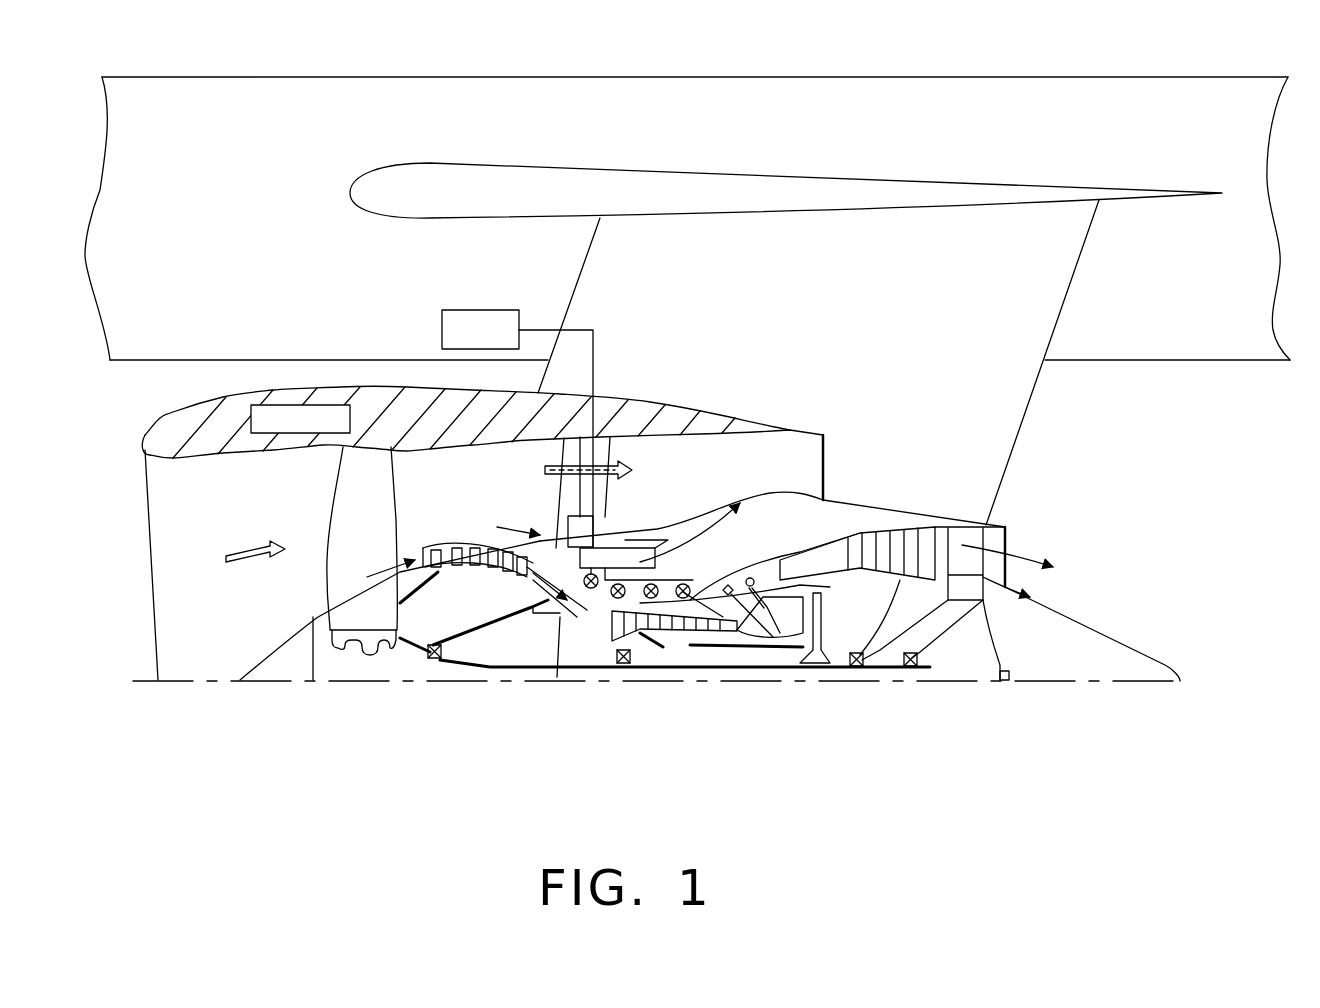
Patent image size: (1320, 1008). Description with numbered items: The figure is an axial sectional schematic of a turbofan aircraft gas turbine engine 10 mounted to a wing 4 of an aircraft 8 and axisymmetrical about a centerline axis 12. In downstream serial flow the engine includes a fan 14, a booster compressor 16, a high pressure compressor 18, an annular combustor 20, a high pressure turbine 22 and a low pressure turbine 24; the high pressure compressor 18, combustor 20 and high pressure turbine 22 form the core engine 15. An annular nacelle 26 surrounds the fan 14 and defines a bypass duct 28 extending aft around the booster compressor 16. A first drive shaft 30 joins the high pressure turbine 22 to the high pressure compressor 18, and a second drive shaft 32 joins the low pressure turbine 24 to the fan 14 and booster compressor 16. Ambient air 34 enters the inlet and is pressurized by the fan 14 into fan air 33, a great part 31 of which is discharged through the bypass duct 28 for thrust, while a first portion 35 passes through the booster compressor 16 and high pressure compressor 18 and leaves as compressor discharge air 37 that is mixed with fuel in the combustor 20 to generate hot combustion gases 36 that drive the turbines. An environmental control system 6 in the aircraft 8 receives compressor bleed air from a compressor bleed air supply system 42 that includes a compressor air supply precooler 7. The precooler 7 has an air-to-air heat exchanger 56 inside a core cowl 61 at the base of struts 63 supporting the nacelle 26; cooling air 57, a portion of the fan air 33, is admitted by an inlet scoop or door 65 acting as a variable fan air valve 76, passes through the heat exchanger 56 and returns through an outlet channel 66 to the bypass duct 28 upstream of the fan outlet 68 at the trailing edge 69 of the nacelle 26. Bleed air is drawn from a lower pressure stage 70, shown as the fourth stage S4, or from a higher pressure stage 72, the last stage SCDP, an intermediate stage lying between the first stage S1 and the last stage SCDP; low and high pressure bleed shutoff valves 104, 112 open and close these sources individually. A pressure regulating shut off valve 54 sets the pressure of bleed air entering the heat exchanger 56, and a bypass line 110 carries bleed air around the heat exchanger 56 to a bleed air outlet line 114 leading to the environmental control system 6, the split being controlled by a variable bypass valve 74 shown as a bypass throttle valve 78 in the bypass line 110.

The wing 4 is at (816, 175).
The environmental control system 6 is at (476, 310).
The compressor air supply precooler 7 is at (612, 598).
The aircraft 8 is at (760, 76).
The gas turbine engine 10 is at (240, 733).
The centerline axis 12 is at (1078, 680).
The fan 14 is at (381, 514).
The core engine 15 is at (744, 570).
The booster compressor 16 is at (453, 545).
The high pressure compressor 18 is at (657, 600).
The annular combustor 20 is at (775, 640).
The high pressure turbine 22 is at (818, 570).
The low pressure turbine 24 is at (900, 528).
The nacelle 26 is at (433, 432).
The bypass duct 28 is at (723, 470).
The first drive shaft 30 is at (726, 630).
The great part of fan air 31 is at (552, 478).
The second drive shaft 32 is at (674, 634).
The fan air 33 is at (240, 555).
The ambient air 34 is at (125, 598).
The first portion of fan air 35 is at (367, 577).
The hot combustion gases 36 is at (765, 630).
The compressor discharge air 37 is at (760, 630).
The compressor bleed air supply system 42 is at (712, 343).
The pressure regulating shut off valve 54 is at (590, 595).
The air-to-air heat exchanger 56 is at (651, 548).
The cooling air 57 is at (548, 543).
The core cowl 61 is at (770, 500).
The struts 63 is at (607, 462).
The inlet scoop or door 65 is at (572, 538).
The outlet channel 66 is at (675, 553).
The fan outlet 68 is at (823, 474).
The trailing edge 69 is at (823, 437).
The lower pressure stage 70 is at (628, 620).
The higher pressure stage 72 is at (710, 640).
The variable bypass valve 74 is at (575, 637).
The variable fan air valve 76 is at (532, 582).
The bypass throttle valve 78 is at (570, 625).
The low pressure bleed shutoff valve 104 is at (668, 600).
The bypass line 110 is at (598, 372).
The high pressure bleed shutoff valve 112 is at (688, 585).
The bleed air outlet line 114 is at (597, 345).
The first stage S1 is at (620, 600).
The fourth stage S4 is at (650, 600).
The last stage SCDP is at (790, 650).